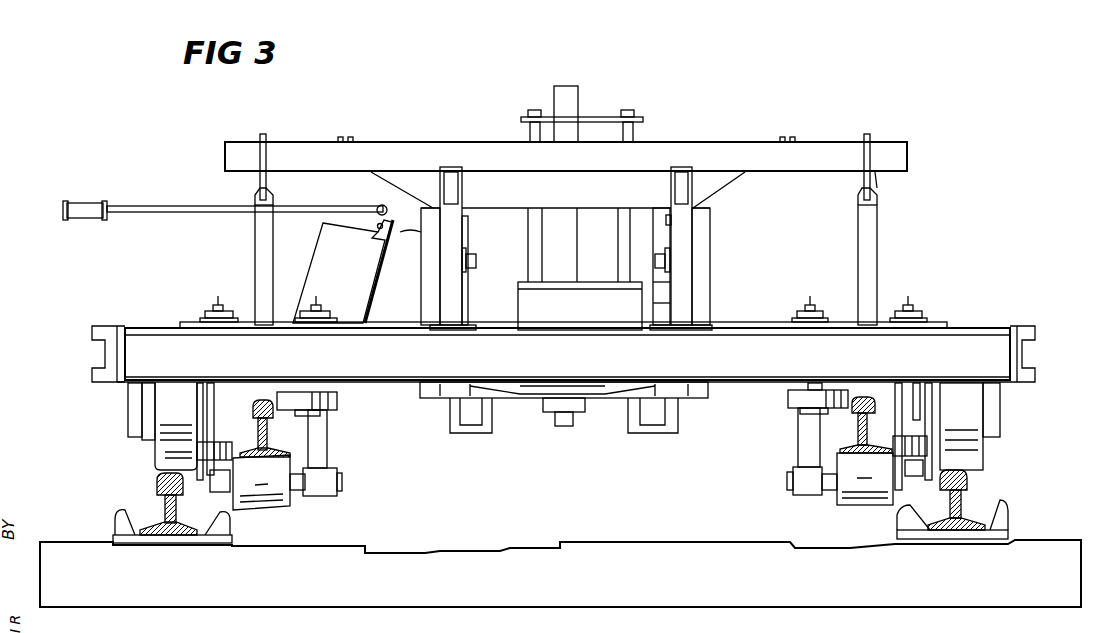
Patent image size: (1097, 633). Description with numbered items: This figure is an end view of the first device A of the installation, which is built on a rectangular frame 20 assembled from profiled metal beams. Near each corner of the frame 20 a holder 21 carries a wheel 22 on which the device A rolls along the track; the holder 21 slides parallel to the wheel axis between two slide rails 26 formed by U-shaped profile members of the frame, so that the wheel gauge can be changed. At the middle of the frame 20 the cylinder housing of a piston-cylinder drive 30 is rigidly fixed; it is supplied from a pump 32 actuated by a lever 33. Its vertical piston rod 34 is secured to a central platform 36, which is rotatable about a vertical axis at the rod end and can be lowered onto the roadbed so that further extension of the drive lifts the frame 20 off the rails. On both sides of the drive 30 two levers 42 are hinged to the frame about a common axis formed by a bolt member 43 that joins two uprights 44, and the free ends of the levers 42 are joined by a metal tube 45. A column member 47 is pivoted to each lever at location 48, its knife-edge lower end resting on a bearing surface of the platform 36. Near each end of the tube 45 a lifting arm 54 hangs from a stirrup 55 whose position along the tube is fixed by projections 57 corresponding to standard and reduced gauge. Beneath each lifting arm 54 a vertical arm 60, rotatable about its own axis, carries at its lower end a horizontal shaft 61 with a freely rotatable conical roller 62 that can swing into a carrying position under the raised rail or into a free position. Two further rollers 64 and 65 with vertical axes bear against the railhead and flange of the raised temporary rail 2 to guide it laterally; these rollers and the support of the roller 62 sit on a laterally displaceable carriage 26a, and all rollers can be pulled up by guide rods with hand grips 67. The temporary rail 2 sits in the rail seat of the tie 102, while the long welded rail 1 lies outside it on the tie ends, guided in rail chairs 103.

The rail 1 is at (960, 504).
The temporary rail 2 is at (857, 427).
The rectangular frame 20 is at (767, 322).
The holder 21 is at (1000, 401).
The wheel 22 is at (155, 402).
The slide rail 26 is at (958, 323).
The slide or carriage 26a is at (841, 322).
The piston-cylinder drive 30 is at (568, 130).
The pump 32 is at (330, 271).
The lever 33 is at (148, 206).
The piston rod 34 is at (570, 415).
The central platform 36 is at (497, 410).
The lever 42 is at (454, 234).
The bolt member 43 is at (476, 263).
The upright 44 is at (465, 303).
The metal tube 45 is at (298, 150).
The column member 47 is at (702, 268).
The pivot location 48 is at (667, 221).
The lifting arm 54 is at (870, 236).
The stirrup 55 is at (872, 178).
The projection 57 is at (265, 134).
The vertical arm 60 is at (327, 442).
The horizontal shaft 61 is at (298, 490).
The roller 62 is at (264, 490).
The roller 64 is at (322, 402).
The roller 65 is at (200, 452).
The hand grip 67 is at (811, 299).
The tie 102 is at (577, 598).
The rail chair 103 is at (1005, 518).
The first device A is at (190, 312).